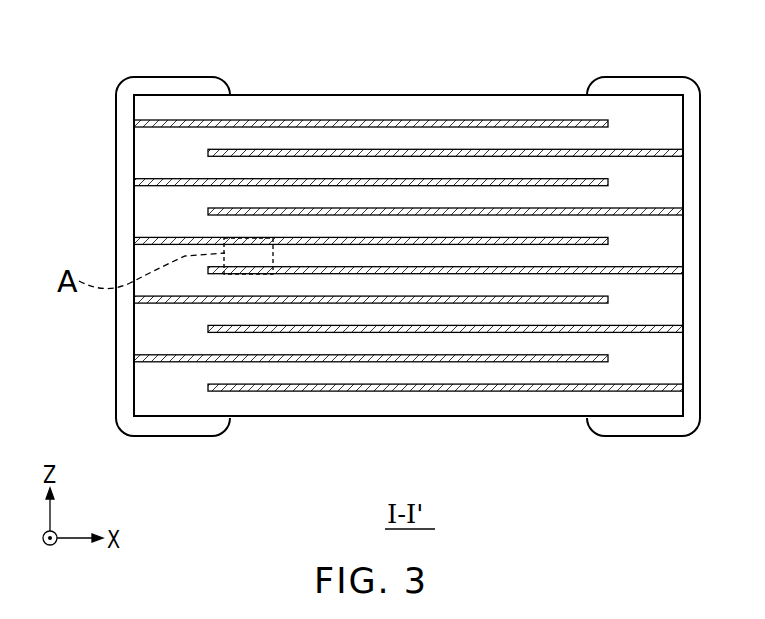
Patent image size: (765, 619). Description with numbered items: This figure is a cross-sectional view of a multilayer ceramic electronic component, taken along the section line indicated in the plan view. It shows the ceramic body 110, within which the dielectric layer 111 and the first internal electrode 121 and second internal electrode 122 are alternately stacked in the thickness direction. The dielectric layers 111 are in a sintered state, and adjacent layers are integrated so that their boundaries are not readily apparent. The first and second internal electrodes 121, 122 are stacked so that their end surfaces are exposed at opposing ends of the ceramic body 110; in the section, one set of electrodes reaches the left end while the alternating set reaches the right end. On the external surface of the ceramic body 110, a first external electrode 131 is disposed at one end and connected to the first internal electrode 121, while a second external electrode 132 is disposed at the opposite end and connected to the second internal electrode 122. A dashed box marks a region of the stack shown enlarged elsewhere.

The ceramic body 110 is at (391, 94).
The dielectric layer 111 is at (490, 343).
The first internal electrode 121 is at (348, 332).
The second internal electrode 122 is at (387, 360).
The first external electrode 131 is at (171, 78).
The second external electrode 132 is at (648, 78).